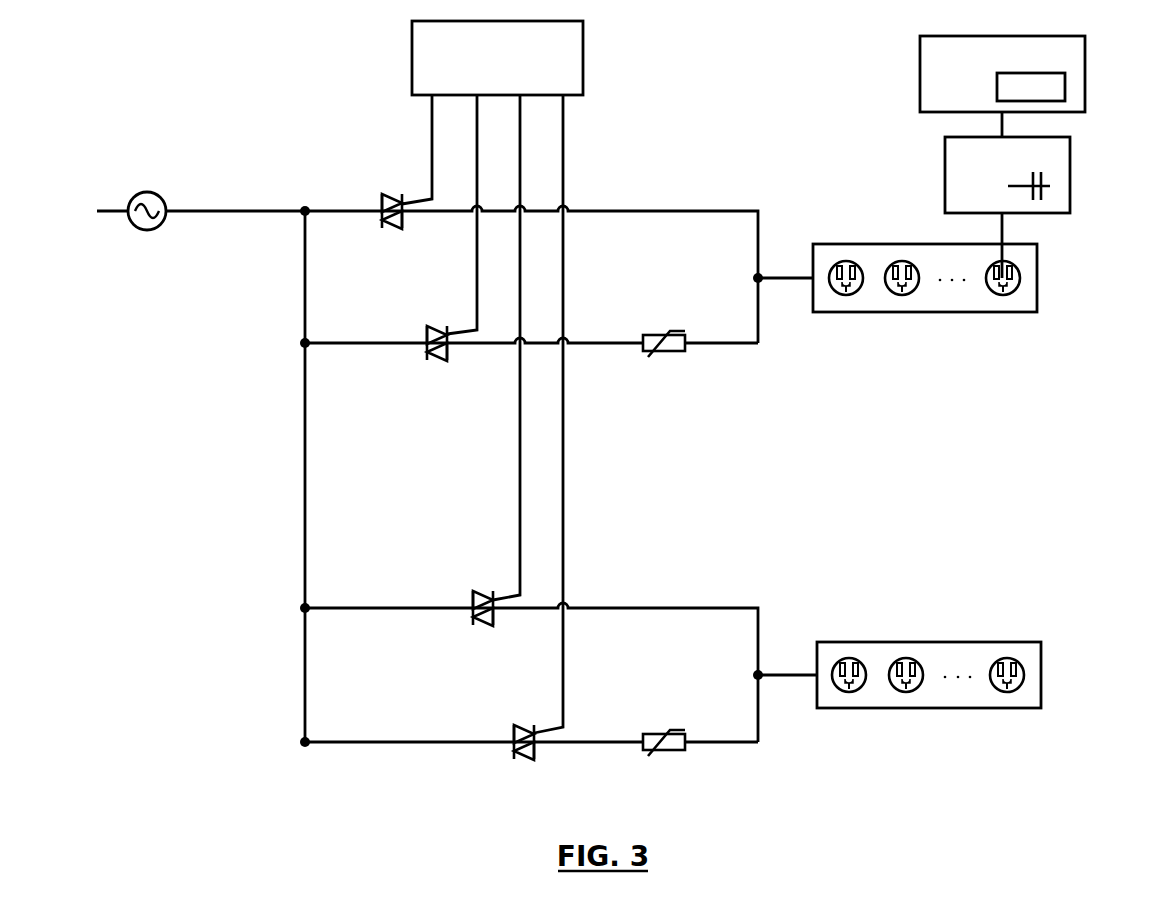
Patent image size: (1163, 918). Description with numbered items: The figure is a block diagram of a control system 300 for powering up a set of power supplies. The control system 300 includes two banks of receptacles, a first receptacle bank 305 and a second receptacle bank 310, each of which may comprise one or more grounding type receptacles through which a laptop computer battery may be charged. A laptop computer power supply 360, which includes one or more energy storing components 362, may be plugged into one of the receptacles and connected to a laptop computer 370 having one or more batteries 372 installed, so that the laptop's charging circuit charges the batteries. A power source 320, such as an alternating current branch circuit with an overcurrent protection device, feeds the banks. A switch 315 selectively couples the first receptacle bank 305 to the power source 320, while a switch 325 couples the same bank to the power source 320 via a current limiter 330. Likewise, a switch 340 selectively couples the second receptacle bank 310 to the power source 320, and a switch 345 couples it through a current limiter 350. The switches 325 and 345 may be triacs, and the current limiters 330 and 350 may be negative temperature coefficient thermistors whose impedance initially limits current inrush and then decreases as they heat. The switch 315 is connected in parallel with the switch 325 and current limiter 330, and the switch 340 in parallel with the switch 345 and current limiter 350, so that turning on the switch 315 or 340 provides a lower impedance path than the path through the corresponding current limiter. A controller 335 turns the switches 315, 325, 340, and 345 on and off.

The control system 300 is at (750, 99).
The first receptacle bank 305 is at (925, 299).
The second receptacle bank 310 is at (929, 696).
The switch 315 is at (388, 234).
The power source 320 is at (147, 227).
The switch 325 is at (437, 366).
The current limiter 330 is at (664, 364).
The controller 335 is at (514, 82).
The switch 340 is at (486, 631).
The switch 345 is at (529, 763).
The current limiter 350 is at (664, 762).
The laptop computer power supply 360 is at (1070, 140).
The energy storing component 362 is at (1050, 192).
The laptop computer 370 is at (1085, 38).
The battery 372 is at (1065, 87).